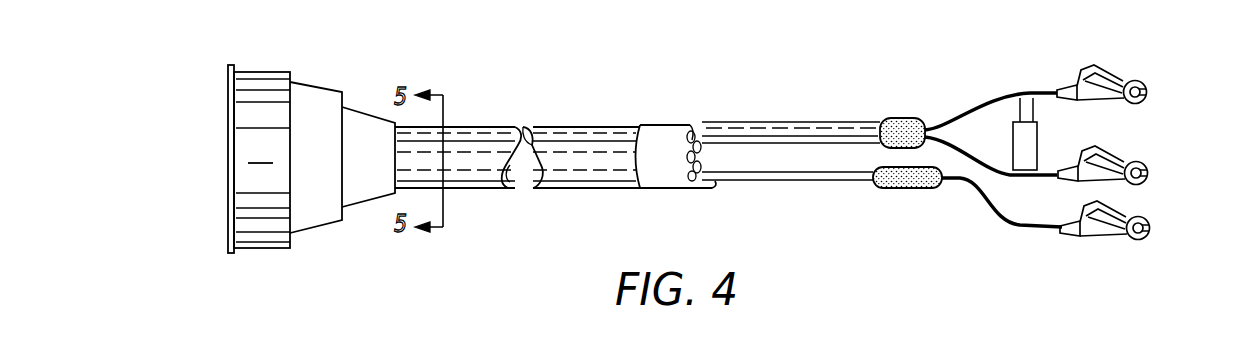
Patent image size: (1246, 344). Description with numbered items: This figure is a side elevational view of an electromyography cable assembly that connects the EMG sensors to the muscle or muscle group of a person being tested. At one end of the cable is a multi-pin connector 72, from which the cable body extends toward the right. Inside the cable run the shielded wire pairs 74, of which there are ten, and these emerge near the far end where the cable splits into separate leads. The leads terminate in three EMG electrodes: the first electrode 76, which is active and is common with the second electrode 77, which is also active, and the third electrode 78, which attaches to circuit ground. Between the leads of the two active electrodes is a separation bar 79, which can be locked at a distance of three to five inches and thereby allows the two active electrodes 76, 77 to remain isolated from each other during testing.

The multi-pin connector 72 is at (258, 81).
The shielded wire pairs 74 is at (697, 142).
The first electrode 76 is at (1126, 79).
The second electrode 77 is at (1133, 160).
The third electrode 78 is at (1140, 216).
The separation bar 79 is at (1026, 137).